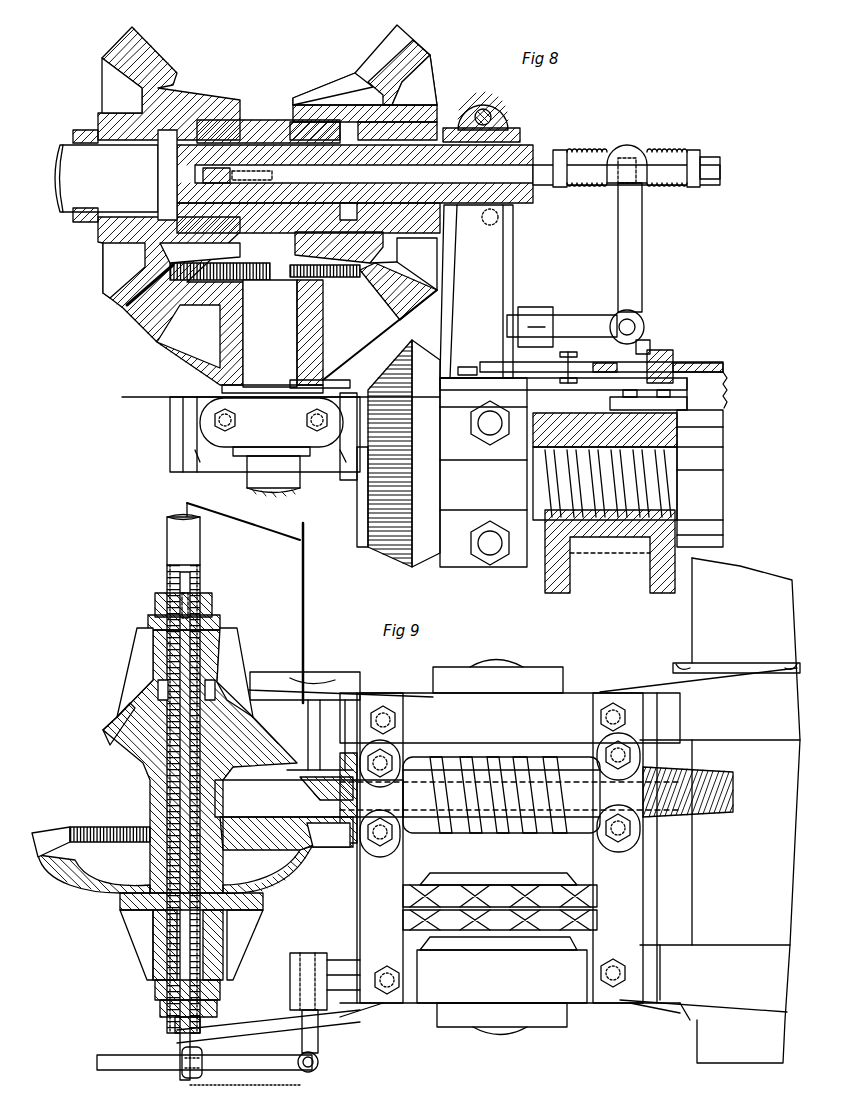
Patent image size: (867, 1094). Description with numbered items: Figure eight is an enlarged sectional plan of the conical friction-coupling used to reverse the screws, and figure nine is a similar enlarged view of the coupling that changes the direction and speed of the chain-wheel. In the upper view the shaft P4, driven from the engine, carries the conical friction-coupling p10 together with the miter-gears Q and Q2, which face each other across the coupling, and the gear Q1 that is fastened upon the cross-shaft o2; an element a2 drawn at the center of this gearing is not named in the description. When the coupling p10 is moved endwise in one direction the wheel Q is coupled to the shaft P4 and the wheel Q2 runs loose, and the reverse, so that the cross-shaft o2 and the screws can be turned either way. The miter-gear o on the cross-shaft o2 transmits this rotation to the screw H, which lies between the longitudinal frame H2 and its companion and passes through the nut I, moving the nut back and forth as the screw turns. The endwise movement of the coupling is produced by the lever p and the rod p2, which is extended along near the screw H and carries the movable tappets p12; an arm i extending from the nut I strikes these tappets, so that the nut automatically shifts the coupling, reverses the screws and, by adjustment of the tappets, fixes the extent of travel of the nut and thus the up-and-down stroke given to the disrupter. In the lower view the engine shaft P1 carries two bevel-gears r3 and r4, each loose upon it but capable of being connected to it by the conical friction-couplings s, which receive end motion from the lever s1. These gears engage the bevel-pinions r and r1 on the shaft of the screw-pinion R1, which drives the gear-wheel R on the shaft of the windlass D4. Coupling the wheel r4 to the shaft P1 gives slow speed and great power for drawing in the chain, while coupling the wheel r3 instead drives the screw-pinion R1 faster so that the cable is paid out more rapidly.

In FIG. 8, the shaft P4 is at (387, 149).
In FIG. 8, the conical friction-coupling p10 is at (253, 127).
In FIG. 8, the miter-gear Q is at (256, 206).
In FIG. 8, the miter-gear Q2 is at (363, 206).
In FIG. 8, the miter-gear Q1 is at (188, 336).
In FIG. 8, the gear hub a2 is at (260, 318).
In FIG. 8, the miter-gear o is at (415, 345).
In FIG. 8, the cross-shaft o2 is at (273, 476).
In FIG. 8, the lever p is at (628, 225).
In FIG. 8, the movable tappets p12 is at (660, 350).
In FIG. 8, the rod p2 is at (467, 367).
In FIG. 8, the arm i is at (693, 385).
In FIG. 8, the nut I is at (570, 412).
In FIG. 8, the screw H is at (605, 503).
In FIG. 8, the longitudinal frame H2 is at (483, 472).
In FIG. 9, the shaft P1 is at (183, 798).
In FIG. 9, the conical friction-couplings s is at (212, 604).
In FIG. 9, the bevel-gear r4 is at (118, 740).
In FIG. 9, the bevel-pinion r1 is at (250, 740).
In FIG. 9, the bevel-pinion r is at (330, 790).
In FIG. 9, the bevel-gear r3 is at (90, 835).
In FIG. 9, the screw-pinion R1 is at (510, 795).
In FIG. 9, the gear-wheel R is at (733, 792).
In FIG. 9, the windlass D4 is at (540, 890).
In FIG. 9, the lever s1 is at (235, 1055).